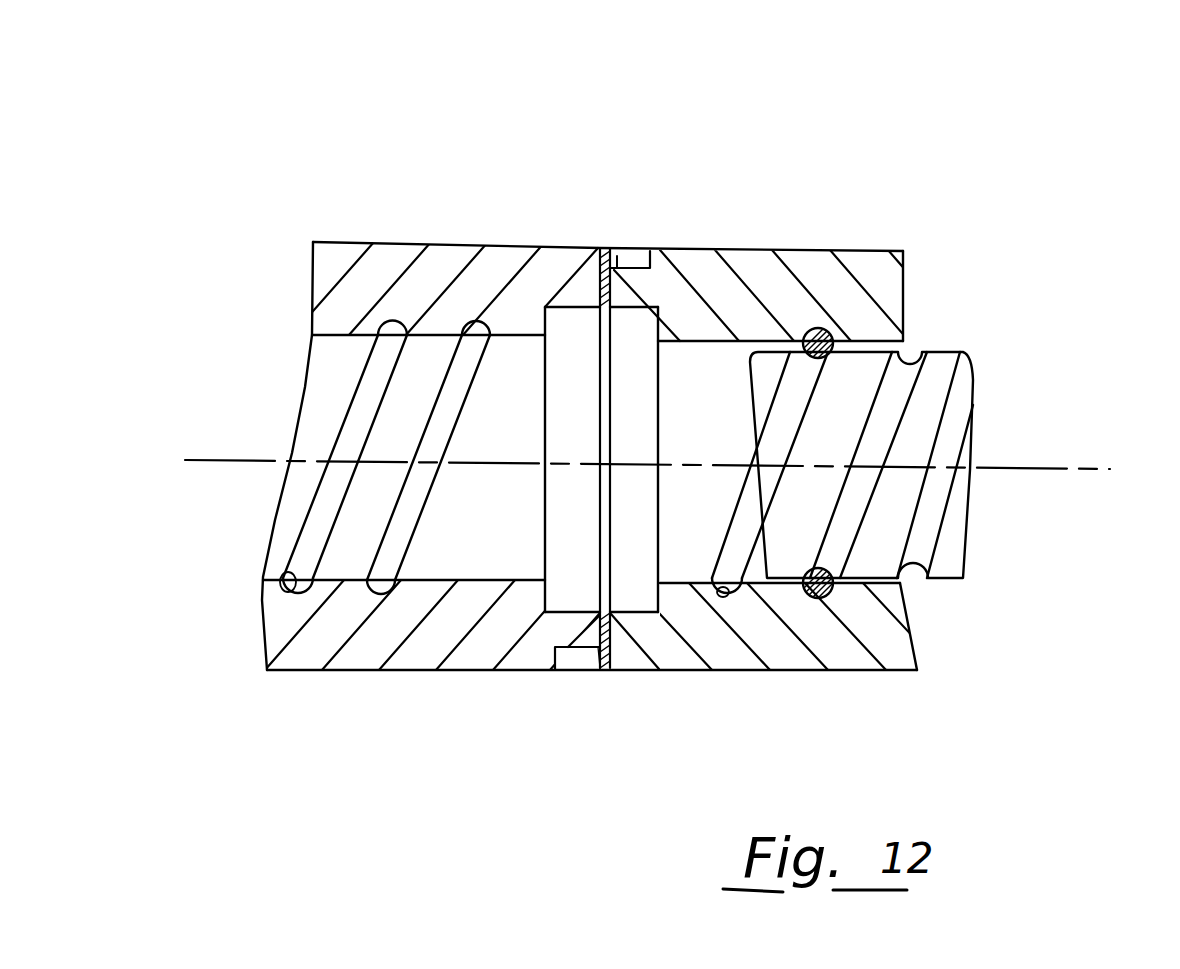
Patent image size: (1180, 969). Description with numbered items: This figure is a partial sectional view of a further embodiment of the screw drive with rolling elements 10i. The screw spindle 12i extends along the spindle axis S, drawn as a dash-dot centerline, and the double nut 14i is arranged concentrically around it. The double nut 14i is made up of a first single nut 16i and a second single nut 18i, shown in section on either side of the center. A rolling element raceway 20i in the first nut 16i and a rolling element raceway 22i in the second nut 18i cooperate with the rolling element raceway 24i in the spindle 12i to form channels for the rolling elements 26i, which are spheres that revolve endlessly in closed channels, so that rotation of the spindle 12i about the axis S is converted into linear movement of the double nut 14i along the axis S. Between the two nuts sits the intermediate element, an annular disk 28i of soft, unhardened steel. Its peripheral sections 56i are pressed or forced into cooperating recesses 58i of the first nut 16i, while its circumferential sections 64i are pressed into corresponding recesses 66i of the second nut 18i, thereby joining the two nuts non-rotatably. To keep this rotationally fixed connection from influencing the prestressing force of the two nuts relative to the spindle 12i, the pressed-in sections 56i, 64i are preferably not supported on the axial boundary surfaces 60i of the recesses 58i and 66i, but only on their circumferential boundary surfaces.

The screw drive with rolling elements 10i is at (1057, 167).
The screw spindle 12i is at (937, 432).
The double nut 14i is at (303, 163).
The first single nut 16i is at (870, 266).
The second single nut 18i is at (452, 258).
The rolling element raceway 20i is at (722, 618).
The rolling element raceway 22i is at (265, 580).
The rolling element raceway 24i is at (937, 518).
The rolling elements 26i is at (827, 600).
The annular disk 28i is at (600, 492).
The peripheral sections 56i is at (605, 247).
The recesses 58i is at (628, 248).
The axial boundary surfaces 60i is at (650, 250).
The circumferential sections 64i is at (598, 655).
The recesses 66i is at (593, 668).
The spindle axis S is at (203, 455).